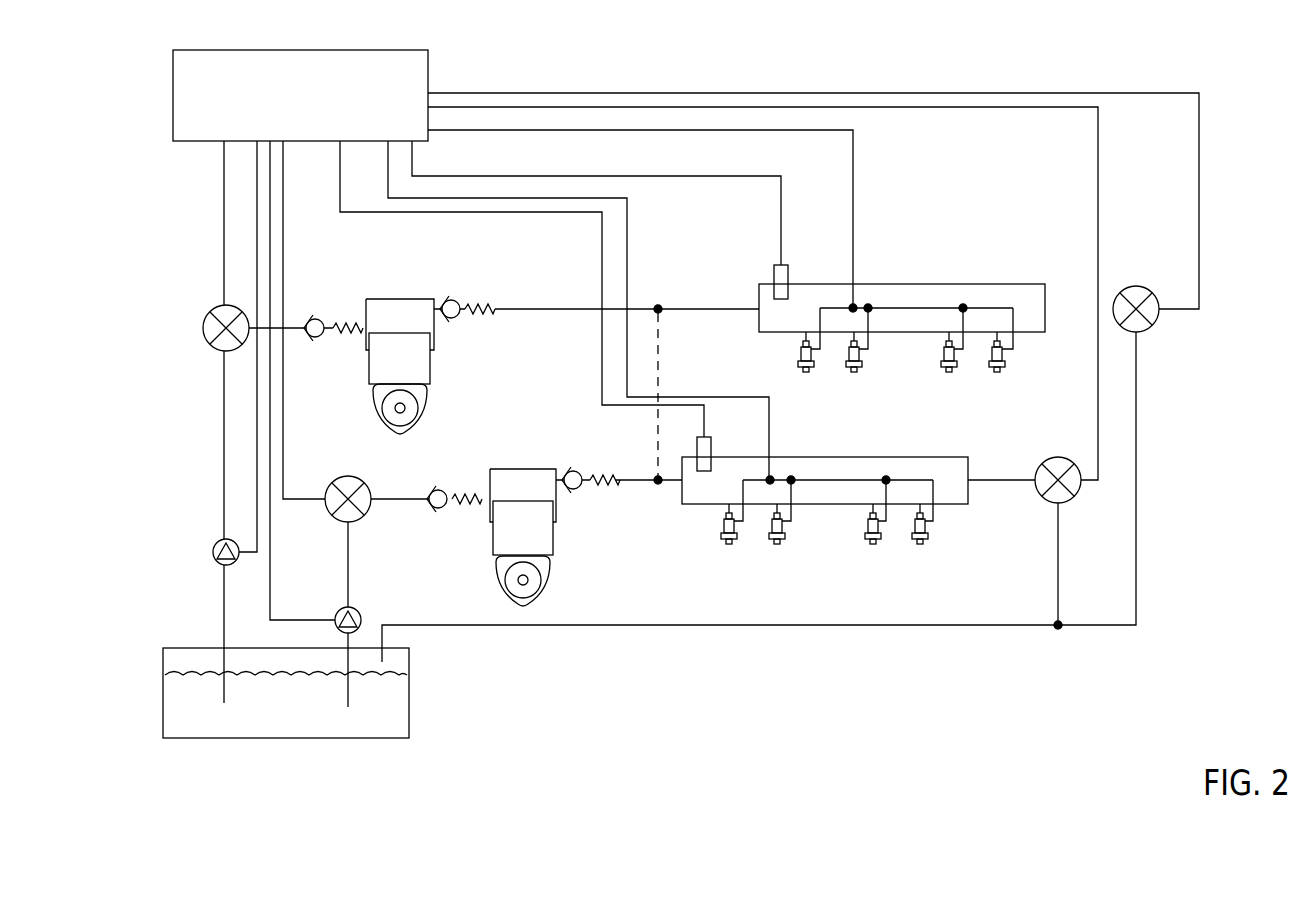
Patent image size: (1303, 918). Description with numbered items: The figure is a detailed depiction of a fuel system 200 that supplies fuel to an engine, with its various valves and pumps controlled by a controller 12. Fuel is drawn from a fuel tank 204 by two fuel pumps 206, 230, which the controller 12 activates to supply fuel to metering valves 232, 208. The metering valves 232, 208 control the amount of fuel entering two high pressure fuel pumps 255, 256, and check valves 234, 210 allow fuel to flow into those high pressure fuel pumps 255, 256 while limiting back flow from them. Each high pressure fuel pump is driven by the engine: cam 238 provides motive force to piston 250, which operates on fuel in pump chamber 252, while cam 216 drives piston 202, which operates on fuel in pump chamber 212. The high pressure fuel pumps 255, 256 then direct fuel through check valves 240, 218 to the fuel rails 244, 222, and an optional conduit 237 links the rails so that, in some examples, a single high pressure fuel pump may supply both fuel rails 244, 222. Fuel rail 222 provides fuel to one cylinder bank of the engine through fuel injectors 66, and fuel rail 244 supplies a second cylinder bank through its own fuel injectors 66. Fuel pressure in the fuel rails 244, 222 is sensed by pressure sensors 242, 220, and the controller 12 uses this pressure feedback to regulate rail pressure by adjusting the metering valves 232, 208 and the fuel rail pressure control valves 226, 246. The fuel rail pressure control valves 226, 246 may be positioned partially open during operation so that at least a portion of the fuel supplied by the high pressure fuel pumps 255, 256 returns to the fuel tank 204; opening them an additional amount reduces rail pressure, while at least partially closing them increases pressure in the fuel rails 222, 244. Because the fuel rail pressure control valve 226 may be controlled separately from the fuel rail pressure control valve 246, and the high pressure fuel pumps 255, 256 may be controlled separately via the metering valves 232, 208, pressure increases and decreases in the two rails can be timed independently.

The fuel system 200 is at (1176, 56).
The controller 12 is at (300, 95).
The metering valve 232 is at (203, 330).
The check valve 234 is at (320, 320).
The pump chamber 252 is at (400, 324).
The piston 250 is at (399, 358).
The cam 238 is at (373, 412).
The high pressure fuel pump 255 is at (413, 272).
The check valve 240 is at (458, 302).
The optional conduit 237 is at (660, 360).
The pressure sensor 242 is at (788, 272).
The fuel rail 244 is at (916, 284).
The fuel rail pressure control valve 246 is at (1146, 288).
The fuel injectors 66 is at (798, 364).
The fuel rail pressure control valve 226 is at (1068, 460).
The pressure sensor 220 is at (712, 444).
The fuel rail 222 is at (840, 457).
The high pressure fuel pump 256 is at (518, 457).
The check valve 210 is at (440, 490).
The pump chamber 212 is at (523, 495).
The piston 202 is at (523, 528).
The check valve 218 is at (580, 472).
The cam 216 is at (496, 584).
The metering valve 208 is at (332, 520).
The fuel pump 206 is at (336, 628).
The fuel pump 230 is at (213, 556).
The fuel tank 204 is at (410, 722).